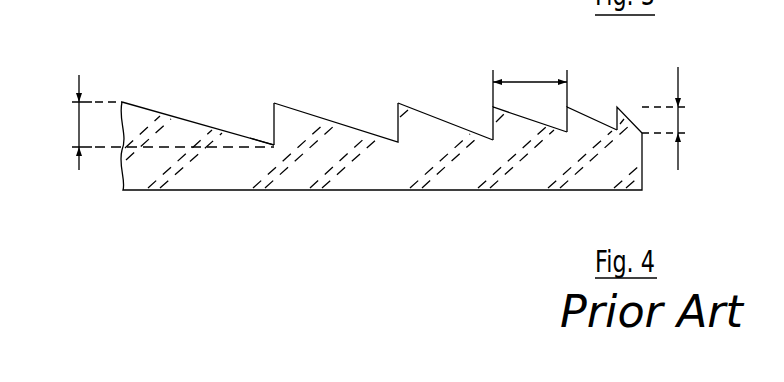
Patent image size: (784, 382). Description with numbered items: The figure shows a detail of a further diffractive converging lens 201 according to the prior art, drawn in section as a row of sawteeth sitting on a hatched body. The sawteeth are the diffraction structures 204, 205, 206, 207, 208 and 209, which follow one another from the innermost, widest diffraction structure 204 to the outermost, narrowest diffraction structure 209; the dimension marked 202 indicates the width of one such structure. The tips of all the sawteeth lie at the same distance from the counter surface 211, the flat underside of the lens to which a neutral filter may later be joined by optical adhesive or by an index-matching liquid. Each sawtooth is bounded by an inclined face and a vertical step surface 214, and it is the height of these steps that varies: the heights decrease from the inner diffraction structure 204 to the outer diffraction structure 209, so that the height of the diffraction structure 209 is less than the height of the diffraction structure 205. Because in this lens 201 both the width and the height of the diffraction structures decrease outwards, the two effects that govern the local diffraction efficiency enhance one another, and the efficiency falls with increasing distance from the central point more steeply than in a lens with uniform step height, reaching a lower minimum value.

The diffractive converging lens 201 is at (378, 60).
The tooth pitch Y202 202 is at (530, 77).
The diffraction structure 204 is at (230, 133).
The diffraction structure 205 is at (350, 130).
The diffraction structure 206 is at (453, 125).
The diffraction structure 207 is at (533, 125).
The diffraction structure 208 is at (597, 123).
The diffraction structure 209 is at (637, 127).
The counter surface 211 is at (285, 191).
The step surface 214 is at (274, 127).